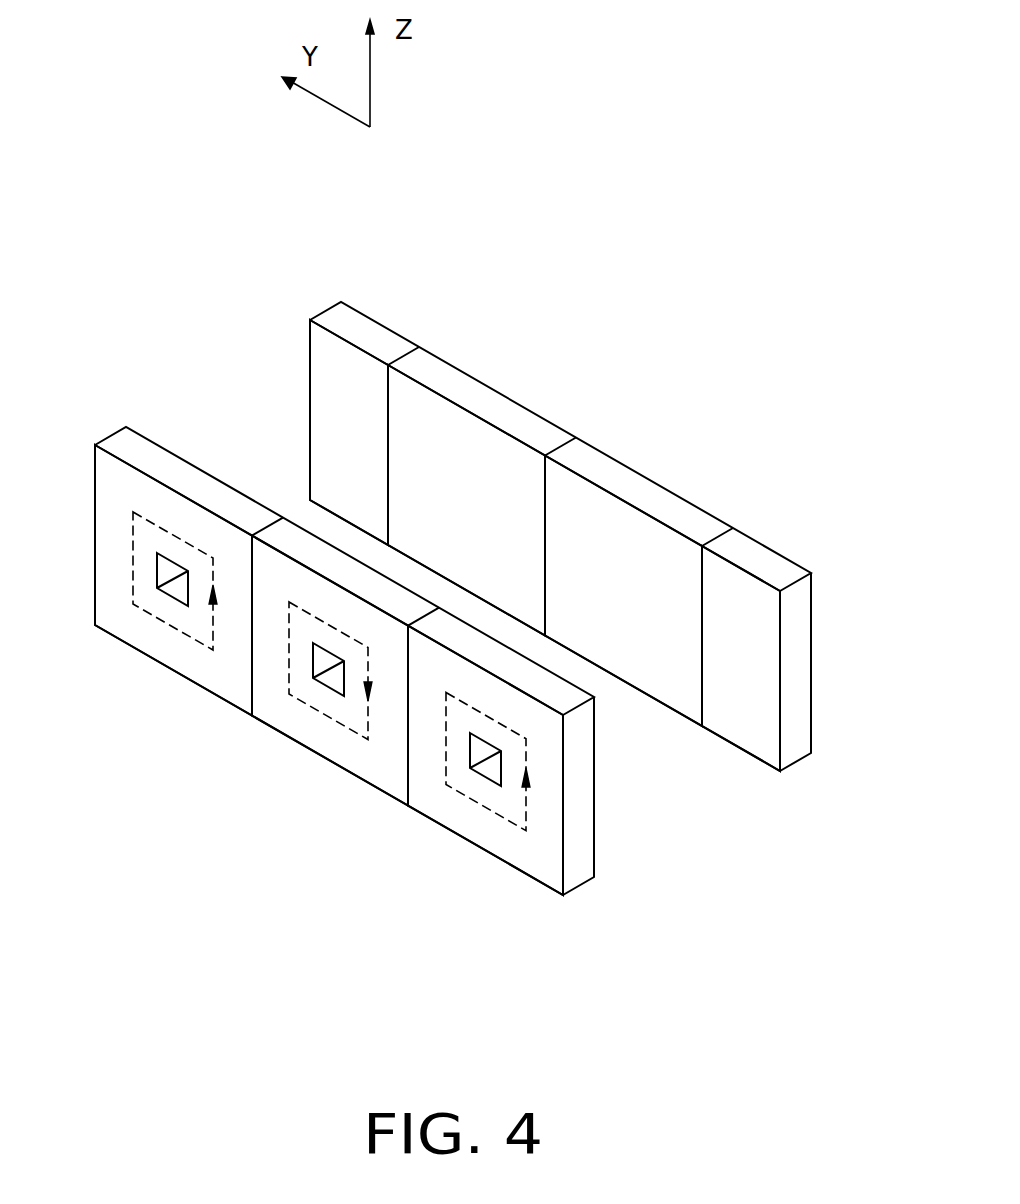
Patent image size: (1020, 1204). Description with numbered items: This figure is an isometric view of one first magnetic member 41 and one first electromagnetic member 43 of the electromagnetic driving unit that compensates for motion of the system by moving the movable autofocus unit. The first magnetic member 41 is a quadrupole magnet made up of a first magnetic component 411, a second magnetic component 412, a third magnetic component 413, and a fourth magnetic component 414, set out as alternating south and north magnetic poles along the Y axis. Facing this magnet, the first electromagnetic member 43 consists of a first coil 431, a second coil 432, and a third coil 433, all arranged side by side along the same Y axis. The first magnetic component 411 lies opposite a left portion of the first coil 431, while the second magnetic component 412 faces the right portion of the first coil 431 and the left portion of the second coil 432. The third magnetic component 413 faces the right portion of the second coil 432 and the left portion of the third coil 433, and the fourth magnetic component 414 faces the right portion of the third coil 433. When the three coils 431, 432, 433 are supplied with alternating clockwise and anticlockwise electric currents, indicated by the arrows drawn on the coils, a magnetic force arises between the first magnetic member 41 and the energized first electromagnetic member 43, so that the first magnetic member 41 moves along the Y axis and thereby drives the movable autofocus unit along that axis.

The first magnetic member 41 is at (566, 204).
The first magnetic component 411 is at (365, 332).
The second magnetic component 412 is at (467, 387).
The third magnetic component 413 is at (615, 478).
The fourth magnetic component 414 is at (752, 553).
The first electromagnetic member 43 is at (52, 709).
The first coil 431 is at (187, 648).
The second coil 432 is at (325, 730).
The third coil 433 is at (473, 818).